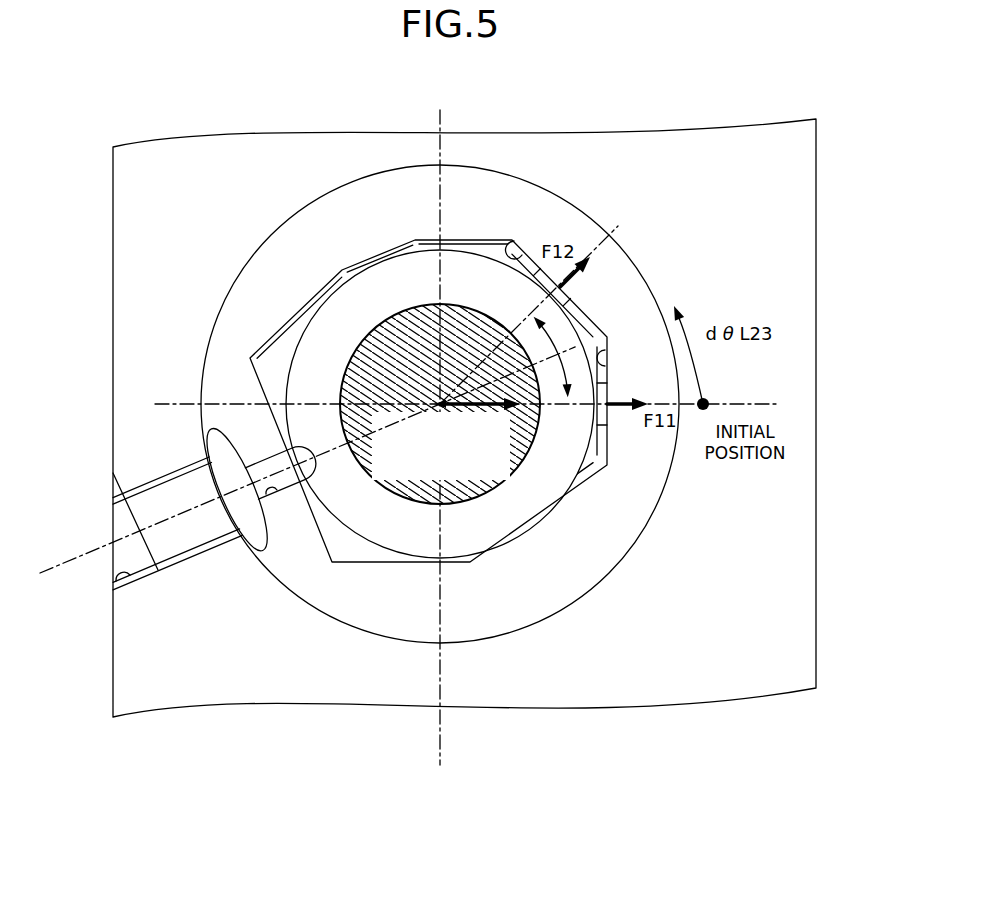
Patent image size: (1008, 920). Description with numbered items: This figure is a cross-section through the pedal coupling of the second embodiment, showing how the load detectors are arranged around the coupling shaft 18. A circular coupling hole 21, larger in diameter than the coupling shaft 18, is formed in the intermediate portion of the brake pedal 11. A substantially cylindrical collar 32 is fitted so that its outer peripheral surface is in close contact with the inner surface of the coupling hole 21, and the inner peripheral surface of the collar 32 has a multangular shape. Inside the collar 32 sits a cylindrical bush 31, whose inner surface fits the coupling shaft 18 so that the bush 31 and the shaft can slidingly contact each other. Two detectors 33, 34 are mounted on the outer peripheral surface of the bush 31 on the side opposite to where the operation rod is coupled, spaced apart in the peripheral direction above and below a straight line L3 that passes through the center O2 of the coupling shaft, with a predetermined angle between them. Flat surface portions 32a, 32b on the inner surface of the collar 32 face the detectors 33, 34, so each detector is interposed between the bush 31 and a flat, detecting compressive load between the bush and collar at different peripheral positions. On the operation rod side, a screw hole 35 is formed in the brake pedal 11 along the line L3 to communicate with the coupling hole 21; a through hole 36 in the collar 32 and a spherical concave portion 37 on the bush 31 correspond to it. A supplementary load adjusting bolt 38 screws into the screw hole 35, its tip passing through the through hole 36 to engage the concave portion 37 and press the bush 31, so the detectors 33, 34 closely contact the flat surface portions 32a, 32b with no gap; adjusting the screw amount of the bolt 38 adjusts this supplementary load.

The brake pedal 11 is at (787, 270).
The coupling shaft 18 is at (522, 452).
The coupling hole 21 is at (371, 622).
The bush 31 is at (481, 270).
The collar 32 is at (380, 197).
The flat surface portion 32a is at (602, 358).
The flat surface portion 32b is at (511, 240).
The detector 33 is at (598, 440).
The detector 34 is at (562, 296).
The screw hole 35 is at (112, 573).
The through hole 36 is at (291, 490).
The spherical concave portion 37 is at (303, 490).
The supplementary load adjusting bolt 38 is at (163, 507).
The center of the coupling shaft O2 is at (440, 404).
The straight line L3 is at (57, 568).